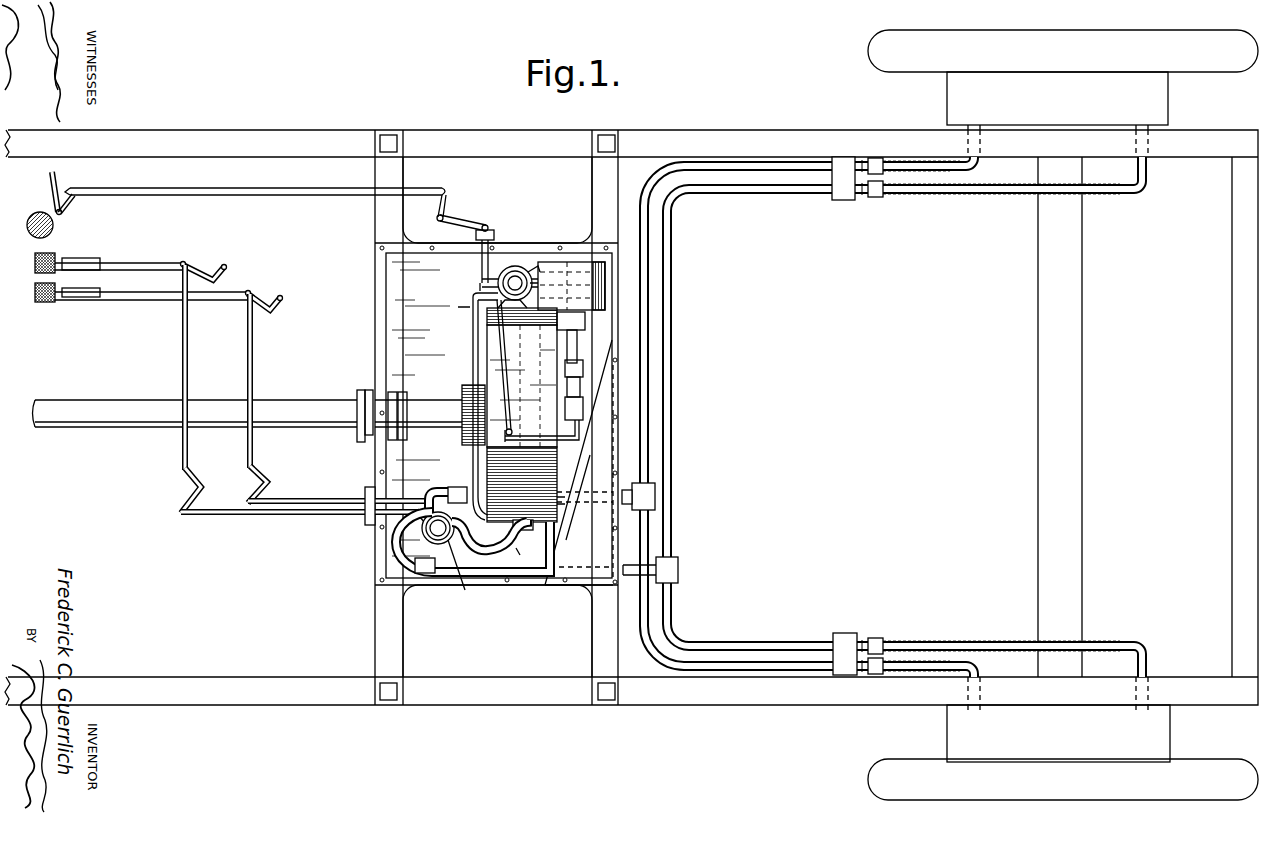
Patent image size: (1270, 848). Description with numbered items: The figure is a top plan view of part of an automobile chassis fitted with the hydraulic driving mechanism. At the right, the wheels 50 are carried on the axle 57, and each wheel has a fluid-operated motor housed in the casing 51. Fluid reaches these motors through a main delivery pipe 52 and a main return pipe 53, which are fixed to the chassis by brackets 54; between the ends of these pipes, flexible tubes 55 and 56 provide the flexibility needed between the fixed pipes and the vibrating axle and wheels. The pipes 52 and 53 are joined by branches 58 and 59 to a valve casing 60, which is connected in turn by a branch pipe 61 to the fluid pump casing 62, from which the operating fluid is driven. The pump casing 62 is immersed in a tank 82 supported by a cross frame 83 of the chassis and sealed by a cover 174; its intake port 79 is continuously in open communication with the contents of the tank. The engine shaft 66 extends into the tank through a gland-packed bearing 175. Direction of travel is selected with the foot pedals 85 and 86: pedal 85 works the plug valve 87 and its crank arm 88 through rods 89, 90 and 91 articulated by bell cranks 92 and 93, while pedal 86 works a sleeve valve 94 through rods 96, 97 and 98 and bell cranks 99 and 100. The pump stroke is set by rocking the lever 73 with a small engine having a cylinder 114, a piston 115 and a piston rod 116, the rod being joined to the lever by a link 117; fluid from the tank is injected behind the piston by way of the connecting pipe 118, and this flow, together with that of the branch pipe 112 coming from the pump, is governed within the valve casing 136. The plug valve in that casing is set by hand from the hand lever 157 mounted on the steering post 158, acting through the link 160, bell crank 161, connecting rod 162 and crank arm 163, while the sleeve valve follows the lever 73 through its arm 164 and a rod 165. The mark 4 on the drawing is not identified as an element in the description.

The connection 4 is at (488, 432).
The wheels 50 is at (868, 775).
The casing 51 is at (958, 729).
The main delivery pipe 52 is at (672, 507).
The main return pipe 53 is at (648, 456).
The brackets 54 is at (842, 638).
The flexible tube 55 is at (1000, 640).
The flexible tube 56 is at (926, 670).
The axle 57 is at (1083, 475).
The branch 58 is at (488, 568).
The branch 59 is at (558, 500).
The valve casing 60 is at (429, 534).
The branch pipe 61 is at (503, 553).
The fluid pump casing 62 is at (550, 476).
The shaft 66 is at (458, 398).
The lever 73 is at (580, 462).
The intake port 79 is at (521, 316).
The tank 82 is at (393, 286).
The cross frame 83 is at (378, 628).
The foot pedal 85 is at (35, 265).
The foot pedal 86 is at (35, 295).
The plug valve 87 is at (455, 575).
The crank arm 88 is at (417, 507).
The rod 89 is at (245, 515).
The rod 90 is at (182, 360).
The rod 91 is at (118, 257).
The bell crank 92 is at (190, 264).
The bell crank 93 is at (185, 497).
The sleeve valve 94 is at (438, 542).
The rod 96 is at (313, 500).
The rod 97 is at (253, 360).
The rod 98 is at (143, 300).
The bell crank 99 is at (279, 303).
The bell crank 100 is at (262, 480).
The branch pipe 112 is at (473, 460).
The cylinder 114 is at (594, 258).
The piston 115 is at (573, 262).
The piston rod 116 is at (580, 340).
The link 117 is at (565, 392).
The connecting pipe 118 is at (531, 264).
The valve casing 136 is at (512, 266).
The hand lever 157 is at (38, 192).
The steering post 158 is at (47, 232).
The link 160 is at (482, 283).
The bell crank 161 is at (458, 222).
The connecting rod 162 is at (288, 196).
The crank arm 163 is at (76, 202).
The arm 164 is at (536, 437).
The rod 165 is at (503, 368).
The cover 174 is at (597, 560).
The gland-packed bearing 175 is at (364, 440).